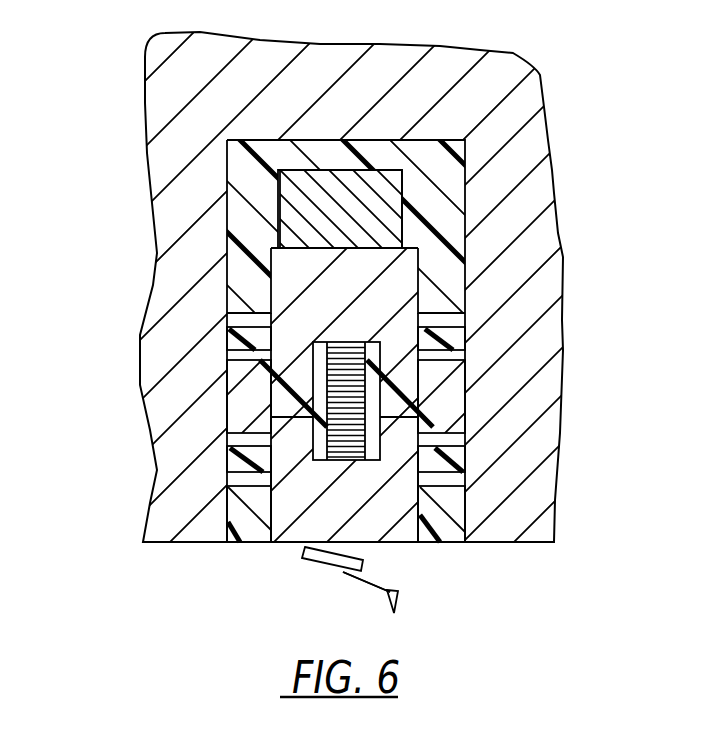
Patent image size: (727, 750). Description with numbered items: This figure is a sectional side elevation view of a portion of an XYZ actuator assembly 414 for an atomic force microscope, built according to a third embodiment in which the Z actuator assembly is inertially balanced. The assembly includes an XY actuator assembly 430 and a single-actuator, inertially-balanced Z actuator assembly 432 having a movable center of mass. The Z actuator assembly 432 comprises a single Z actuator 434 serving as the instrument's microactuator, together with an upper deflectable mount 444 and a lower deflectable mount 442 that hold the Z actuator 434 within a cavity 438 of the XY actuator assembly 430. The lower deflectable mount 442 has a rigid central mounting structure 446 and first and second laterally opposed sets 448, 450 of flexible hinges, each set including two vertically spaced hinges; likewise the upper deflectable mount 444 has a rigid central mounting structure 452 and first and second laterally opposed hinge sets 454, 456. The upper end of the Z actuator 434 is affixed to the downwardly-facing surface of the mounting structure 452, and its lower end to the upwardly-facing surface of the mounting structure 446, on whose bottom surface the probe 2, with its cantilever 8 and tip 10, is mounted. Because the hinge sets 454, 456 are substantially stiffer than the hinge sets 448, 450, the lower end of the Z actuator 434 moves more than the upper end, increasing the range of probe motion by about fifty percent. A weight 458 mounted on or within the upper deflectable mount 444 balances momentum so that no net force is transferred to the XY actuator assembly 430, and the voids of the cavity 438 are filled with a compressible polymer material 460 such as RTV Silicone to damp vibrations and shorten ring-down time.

The probe 2 is at (343, 575).
The cantilever 8 is at (366, 578).
The tip 10 is at (400, 602).
The XYZ actuator assembly 414 is at (558, 105).
The XY actuator assembly 430 is at (160, 104).
The Z actuator assembly 432 is at (369, 401).
The Z actuator 434 is at (308, 385).
The cavity 438 is at (238, 517).
The lower deflectable mount 442 is at (409, 548).
The upper deflectable mount 444 is at (402, 267).
The rigid central mounting structure 446 is at (303, 532).
The first set of flexible hinges 448 is at (242, 462).
The second set of flexible hinges 450 is at (452, 468).
The rigid central mounting structure 452 is at (403, 282).
The first set of flexible hinges 454 is at (240, 334).
The second set of flexible hinges 456 is at (440, 338).
The weight 458 is at (393, 193).
The compressible polymer material 460 is at (383, 140).